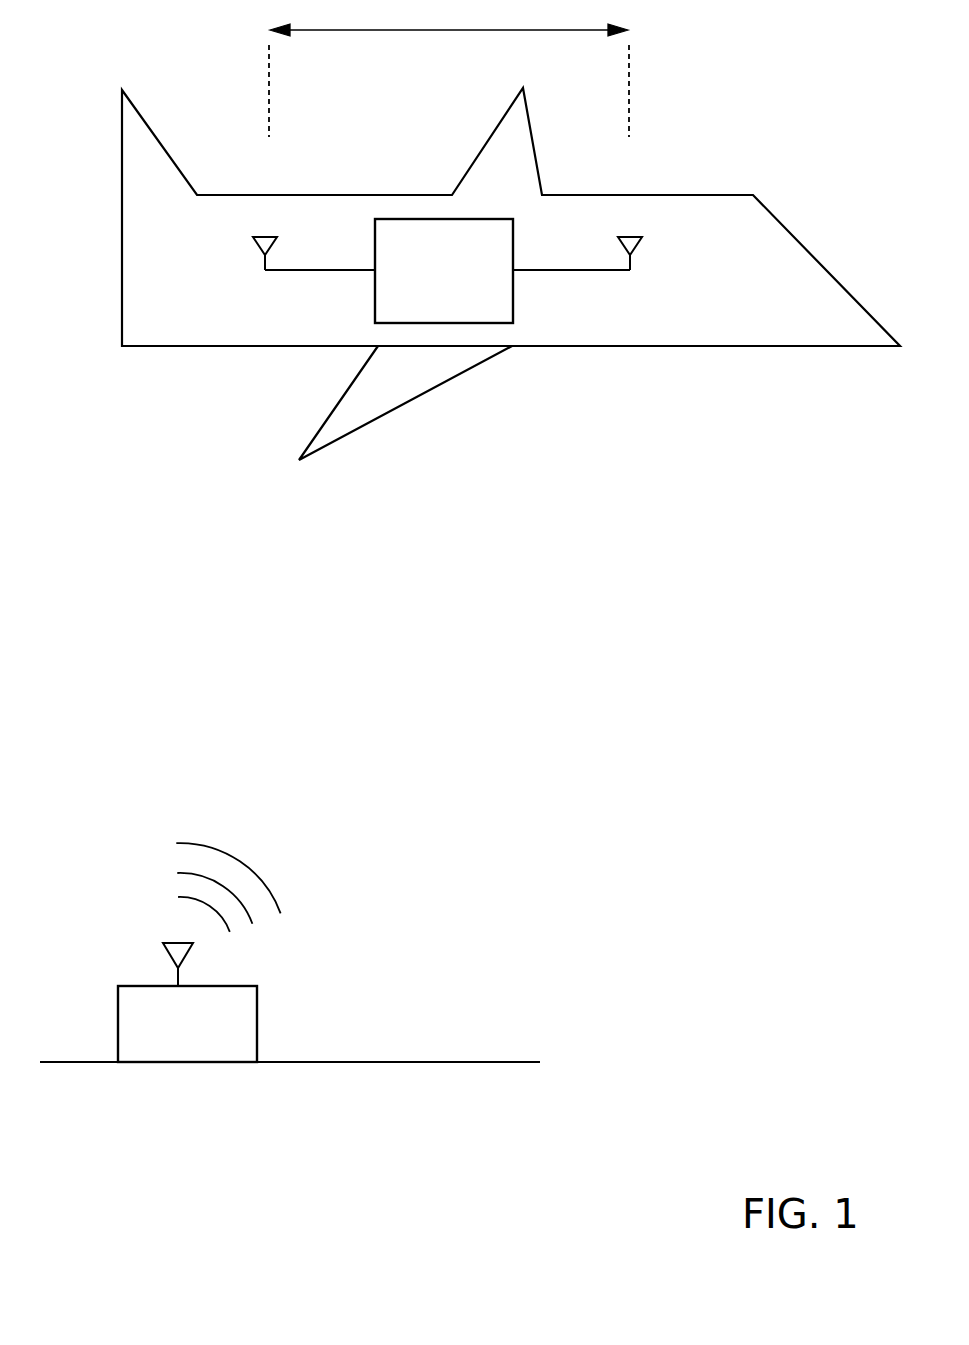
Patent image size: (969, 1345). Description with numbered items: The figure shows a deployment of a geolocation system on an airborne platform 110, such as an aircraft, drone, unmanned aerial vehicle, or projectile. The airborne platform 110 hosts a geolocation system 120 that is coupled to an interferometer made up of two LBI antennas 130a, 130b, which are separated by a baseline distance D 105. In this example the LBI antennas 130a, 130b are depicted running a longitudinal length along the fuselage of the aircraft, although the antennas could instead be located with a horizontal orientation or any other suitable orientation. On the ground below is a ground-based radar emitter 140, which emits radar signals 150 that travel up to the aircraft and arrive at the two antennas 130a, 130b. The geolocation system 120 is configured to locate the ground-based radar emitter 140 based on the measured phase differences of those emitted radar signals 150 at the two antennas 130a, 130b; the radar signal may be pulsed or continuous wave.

The distance D between LBI antennas 105 is at (449, 80).
The airborne platform 110 is at (702, 176).
The geolocation system 120 is at (444, 271).
The LBI antenna 130a is at (629, 265).
The LBI antenna 130b is at (257, 267).
The ground-based radar emitter 140 is at (290, 1002).
The radar signals 150 is at (248, 890).